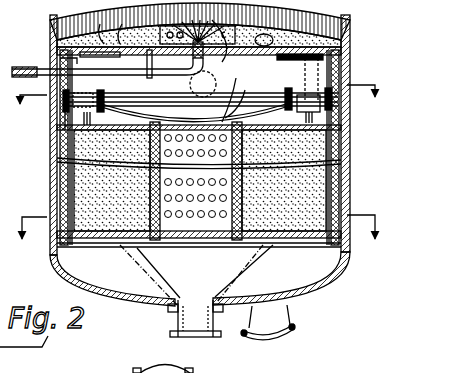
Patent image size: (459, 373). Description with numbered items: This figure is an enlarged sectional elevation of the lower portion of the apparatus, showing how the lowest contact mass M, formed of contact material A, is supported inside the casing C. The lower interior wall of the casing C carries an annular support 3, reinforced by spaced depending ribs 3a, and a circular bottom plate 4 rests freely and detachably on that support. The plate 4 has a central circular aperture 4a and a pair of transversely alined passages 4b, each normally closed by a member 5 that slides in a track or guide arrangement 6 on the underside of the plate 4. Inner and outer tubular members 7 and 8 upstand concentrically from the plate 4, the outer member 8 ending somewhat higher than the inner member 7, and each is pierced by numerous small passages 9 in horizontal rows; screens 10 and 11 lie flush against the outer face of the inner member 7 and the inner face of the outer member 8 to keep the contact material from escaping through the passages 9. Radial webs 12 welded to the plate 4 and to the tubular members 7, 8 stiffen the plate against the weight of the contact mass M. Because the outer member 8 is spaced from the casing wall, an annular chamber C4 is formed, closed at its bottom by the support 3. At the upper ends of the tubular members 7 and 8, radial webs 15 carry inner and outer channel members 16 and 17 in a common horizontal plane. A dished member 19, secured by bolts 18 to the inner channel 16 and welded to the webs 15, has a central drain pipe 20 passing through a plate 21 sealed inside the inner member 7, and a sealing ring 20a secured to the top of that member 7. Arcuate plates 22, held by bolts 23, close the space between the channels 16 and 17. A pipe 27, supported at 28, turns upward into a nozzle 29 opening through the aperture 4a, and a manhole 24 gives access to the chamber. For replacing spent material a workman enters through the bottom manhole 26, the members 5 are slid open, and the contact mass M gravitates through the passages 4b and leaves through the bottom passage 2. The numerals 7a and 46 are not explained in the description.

The passage 2 is at (172, 330).
The annular support 3 is at (52, 235).
The depending ribs 3a is at (60, 272).
The bottom plate 4 is at (74, 258).
The central circular aperture 4a is at (170, 58).
The transversely alined passages 4b is at (265, 272).
The closure members 5 is at (287, 259).
The track or guide arrangement 6 is at (103, 56).
The inner tubular member 7 is at (188, 24).
The bracket 7a is at (68, 62).
The outer tubular member 8 is at (350, 28).
The small passages 9 is at (62, 207).
The screen 10 is at (158, 24).
The screen 11 is at (330, 15).
The webs or ribs 12 is at (50, 30).
The webs or ribs 15 is at (62, 128).
The inner channel member 16 is at (98, 93).
The outer channel member 17 is at (63, 98).
The bolts 18 is at (280, 92).
The dished member 19 is at (237, 94).
The drain pipe 20 is at (250, 118).
The ring 20a is at (246, 98).
The plate 21 is at (134, 117).
The arcuate plates 22 is at (72, 86).
The bolts 23 is at (333, 93).
The manhole 24 is at (189, 84).
The manhole 26 is at (293, 310).
The pipe or conduit 27 is at (36, 68).
The support 28 is at (122, 56).
The nozzle or atomizer 29 is at (240, 24).
The gasket 46 is at (345, 58).
The contact material A is at (18, 191).
The casing C is at (349, 53).
The annular chamber C4 is at (340, 186).
The contact mass M is at (302, 184).